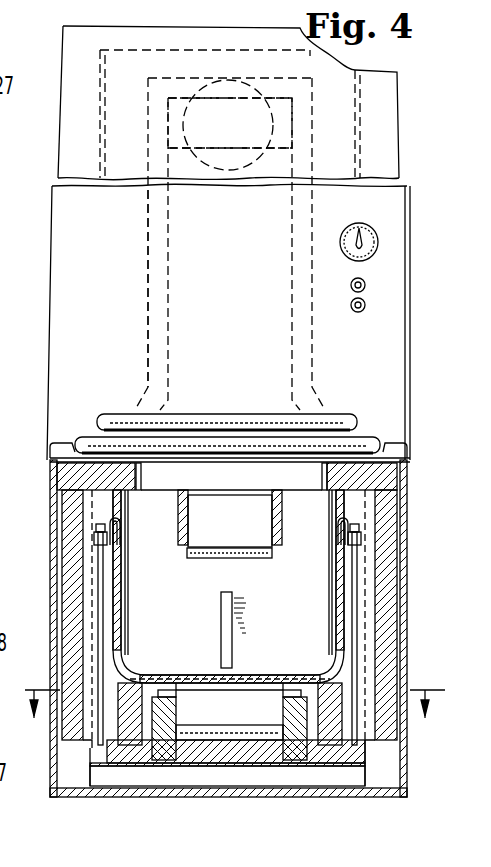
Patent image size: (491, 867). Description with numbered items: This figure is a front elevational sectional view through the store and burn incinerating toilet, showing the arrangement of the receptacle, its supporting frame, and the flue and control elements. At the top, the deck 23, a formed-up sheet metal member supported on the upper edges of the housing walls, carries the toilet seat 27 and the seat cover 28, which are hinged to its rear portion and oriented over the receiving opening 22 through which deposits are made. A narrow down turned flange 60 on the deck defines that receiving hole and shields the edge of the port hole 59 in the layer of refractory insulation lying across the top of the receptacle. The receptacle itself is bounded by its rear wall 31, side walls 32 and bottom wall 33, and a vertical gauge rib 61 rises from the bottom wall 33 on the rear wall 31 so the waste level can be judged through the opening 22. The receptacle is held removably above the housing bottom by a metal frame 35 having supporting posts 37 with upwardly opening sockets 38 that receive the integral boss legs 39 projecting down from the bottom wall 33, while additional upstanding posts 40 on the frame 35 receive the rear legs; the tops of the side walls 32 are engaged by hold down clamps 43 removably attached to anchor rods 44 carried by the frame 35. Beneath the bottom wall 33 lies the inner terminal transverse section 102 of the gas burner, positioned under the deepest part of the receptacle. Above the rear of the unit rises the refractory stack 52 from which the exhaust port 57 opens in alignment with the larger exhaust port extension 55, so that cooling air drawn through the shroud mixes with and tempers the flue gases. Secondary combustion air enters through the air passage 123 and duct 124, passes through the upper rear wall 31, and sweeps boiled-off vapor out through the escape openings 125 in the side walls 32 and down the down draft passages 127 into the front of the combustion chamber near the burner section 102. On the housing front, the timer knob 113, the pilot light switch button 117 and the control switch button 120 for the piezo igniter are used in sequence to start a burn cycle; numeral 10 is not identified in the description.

The housing 10 is at (50, 286).
The opening 22 is at (305, 480).
The deck 23 is at (62, 447).
The toilet seat 27 is at (250, 437).
The seat cover 28 is at (200, 415).
The rear wall 31 is at (210, 624).
The side walls 32 is at (121, 590).
The bottom wall 33 is at (215, 690).
The metal frame 35 is at (135, 770).
The supporting posts 37 is at (178, 740).
The sockets 38 is at (160, 695).
The boss legs 39 is at (185, 682).
The upstanding posts 40 is at (125, 695).
The hold down clamps 43 is at (108, 545).
The anchor rods 44 is at (125, 613).
The stack 52 is at (148, 262).
The exhaust port extension 55 is at (236, 170).
The exhaust port 57 is at (278, 98).
The port hole 59 is at (141, 478).
The down turned flange 60 is at (244, 491).
The gauge rib 61 is at (232, 600).
The inner terminal transverse section 102 is at (245, 770).
The knob 113 is at (352, 235).
The pilot light switch button 117 is at (350, 285).
The control switch button 120 is at (358, 313).
The air passage 123 is at (218, 560).
The duct 124 is at (190, 530).
The escape openings 125 is at (118, 522).
The down draft passages 127 is at (375, 480).